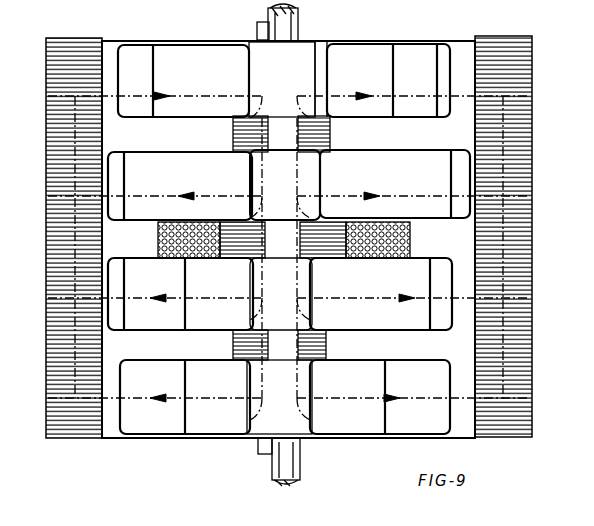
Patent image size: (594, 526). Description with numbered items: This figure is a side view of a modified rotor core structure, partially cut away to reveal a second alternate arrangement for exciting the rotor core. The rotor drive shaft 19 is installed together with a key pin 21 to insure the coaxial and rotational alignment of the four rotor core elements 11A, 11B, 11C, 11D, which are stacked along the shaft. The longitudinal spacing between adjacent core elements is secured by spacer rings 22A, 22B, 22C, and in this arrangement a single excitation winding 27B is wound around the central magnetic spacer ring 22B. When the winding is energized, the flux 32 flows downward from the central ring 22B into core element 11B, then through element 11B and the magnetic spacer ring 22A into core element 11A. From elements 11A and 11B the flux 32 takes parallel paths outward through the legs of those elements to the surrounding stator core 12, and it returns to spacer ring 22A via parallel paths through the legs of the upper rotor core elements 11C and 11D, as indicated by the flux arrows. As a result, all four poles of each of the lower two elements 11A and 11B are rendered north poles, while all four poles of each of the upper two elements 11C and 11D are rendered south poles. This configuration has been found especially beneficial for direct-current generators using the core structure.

The stator core 12 is at (530, 140).
The rotor drive shaft 19 is at (300, 30).
The key pin 21 is at (257, 30).
The magnetic spacer ring 22A is at (328, 352).
The central magnetic spacer ring 22B is at (312, 286).
The spacer ring 22C is at (330, 138).
The excitation winding 27B is at (412, 240).
The flux 32 is at (394, 92).
The rotor core element 11A is at (202, 412).
The rotor core element 11B is at (392, 308).
The rotor core element 11C is at (197, 176).
The rotor core element 11D is at (203, 64).